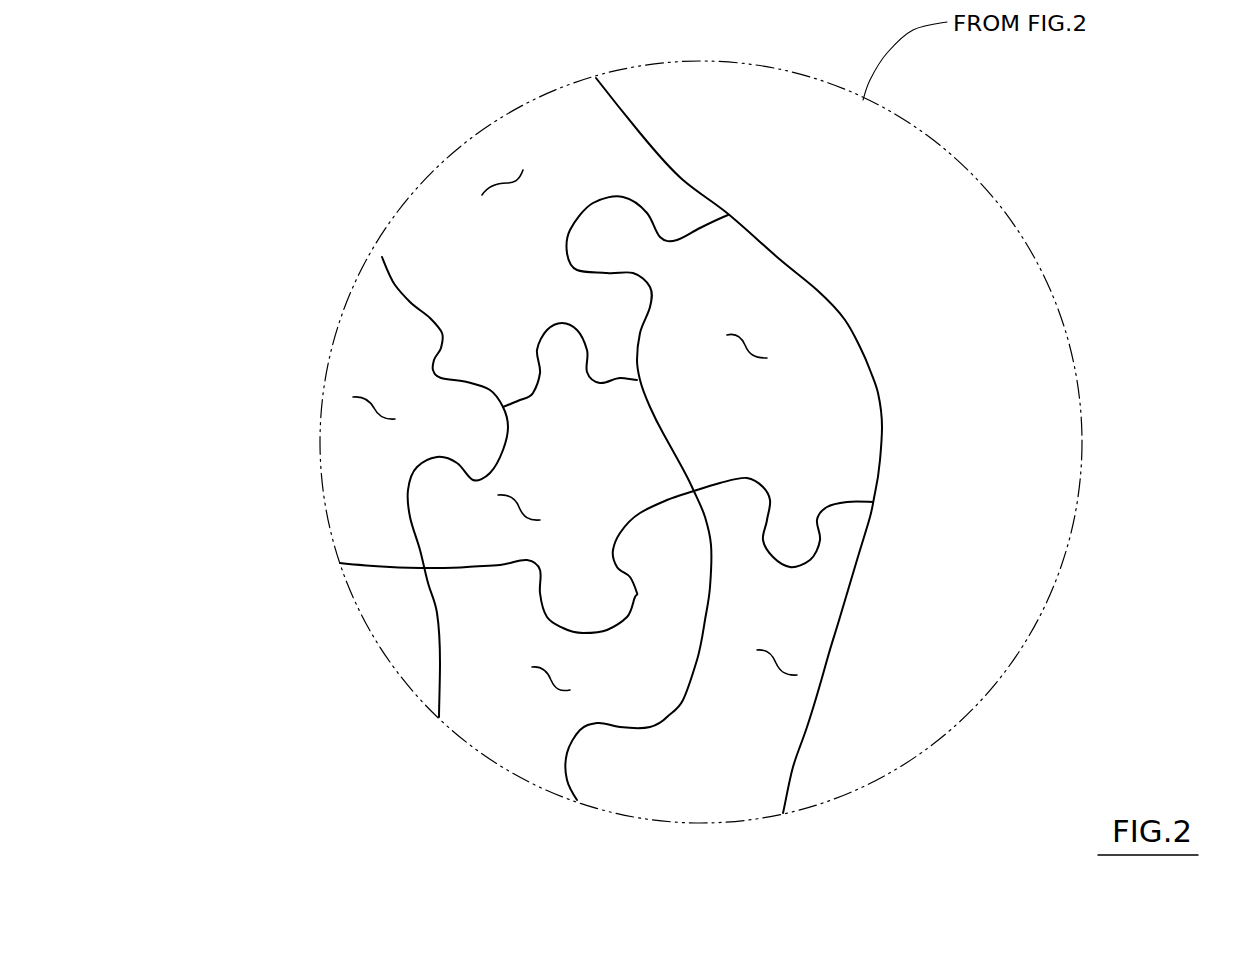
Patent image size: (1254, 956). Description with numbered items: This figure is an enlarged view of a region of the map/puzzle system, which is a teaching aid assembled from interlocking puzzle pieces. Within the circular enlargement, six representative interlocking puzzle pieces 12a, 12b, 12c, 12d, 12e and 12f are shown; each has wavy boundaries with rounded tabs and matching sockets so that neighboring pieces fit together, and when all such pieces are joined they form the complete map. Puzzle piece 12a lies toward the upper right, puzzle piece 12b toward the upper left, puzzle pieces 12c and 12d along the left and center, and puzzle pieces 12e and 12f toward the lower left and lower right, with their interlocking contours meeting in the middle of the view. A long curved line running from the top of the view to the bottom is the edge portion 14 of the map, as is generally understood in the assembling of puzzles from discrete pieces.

The puzzle piece 12a is at (750, 343).
The puzzle piece 12b is at (505, 177).
The puzzle piece 12c is at (370, 415).
The puzzle piece 12d is at (517, 508).
The puzzle piece 12e is at (552, 680).
The puzzle piece 12f is at (783, 660).
The edge portion 14 is at (877, 435).